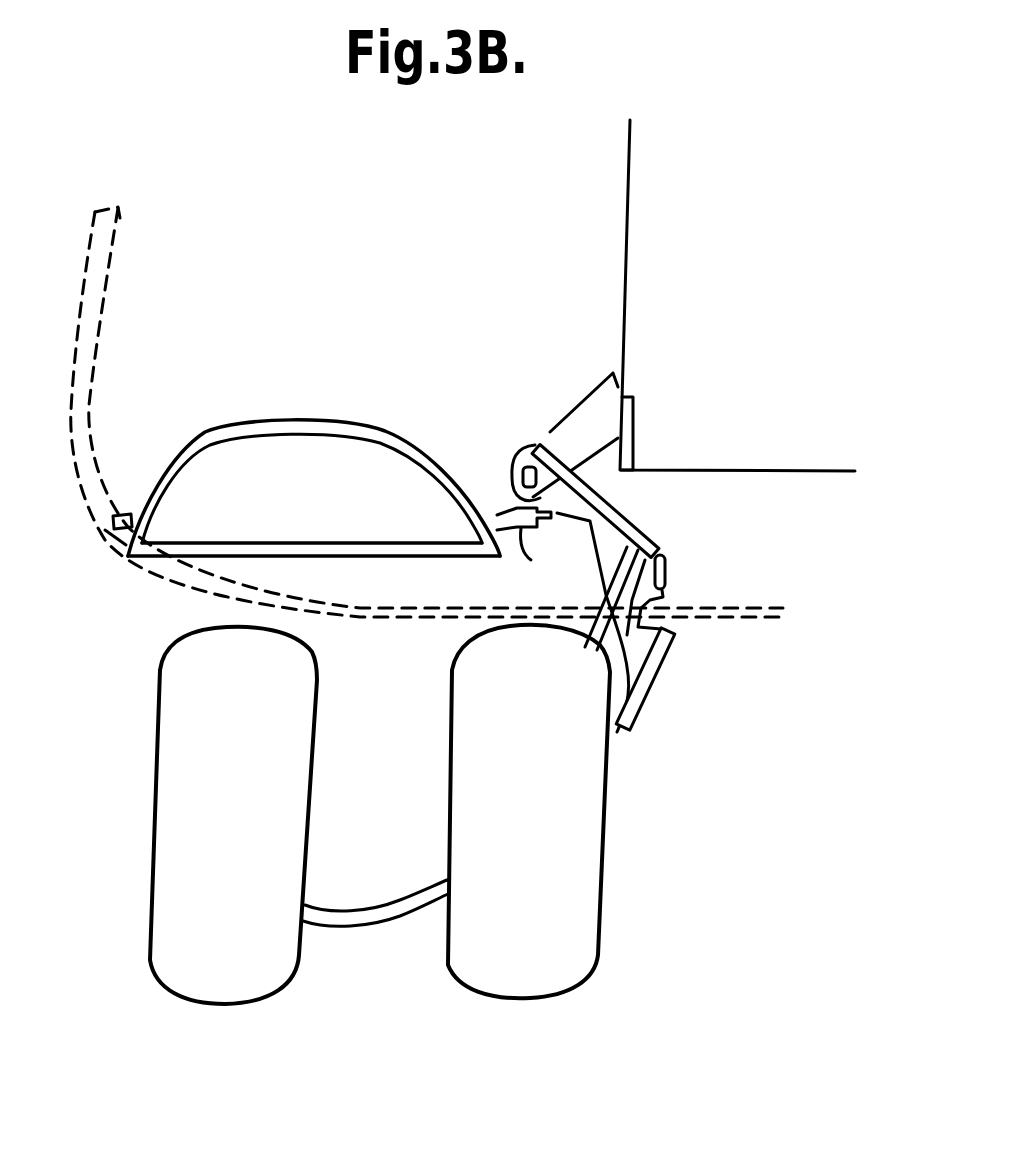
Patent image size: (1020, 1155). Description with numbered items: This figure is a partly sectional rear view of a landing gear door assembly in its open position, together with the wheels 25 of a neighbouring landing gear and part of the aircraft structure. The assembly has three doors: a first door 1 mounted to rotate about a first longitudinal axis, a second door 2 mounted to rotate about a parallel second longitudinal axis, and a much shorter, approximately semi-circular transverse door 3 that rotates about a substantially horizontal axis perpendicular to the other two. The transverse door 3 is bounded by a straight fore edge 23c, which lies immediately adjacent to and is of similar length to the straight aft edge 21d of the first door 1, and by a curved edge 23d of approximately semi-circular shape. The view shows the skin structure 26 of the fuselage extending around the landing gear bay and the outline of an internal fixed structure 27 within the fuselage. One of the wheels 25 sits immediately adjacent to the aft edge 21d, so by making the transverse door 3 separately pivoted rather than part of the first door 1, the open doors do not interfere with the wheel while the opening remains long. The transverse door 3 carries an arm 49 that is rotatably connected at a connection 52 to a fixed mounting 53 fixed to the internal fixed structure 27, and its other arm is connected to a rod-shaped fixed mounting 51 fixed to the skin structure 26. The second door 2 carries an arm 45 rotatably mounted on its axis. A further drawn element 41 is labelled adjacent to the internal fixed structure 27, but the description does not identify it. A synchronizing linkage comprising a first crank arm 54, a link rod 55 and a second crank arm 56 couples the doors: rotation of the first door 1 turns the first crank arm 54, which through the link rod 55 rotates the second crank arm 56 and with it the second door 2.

The first door 1 is at (375, 914).
The second door 2 is at (648, 676).
The transverse door 3 is at (314, 445).
The straight aft edge 21d is at (397, 920).
The straight fore edge 23c is at (432, 566).
The curved edge 23d is at (387, 432).
The wheels 25 is at (158, 985).
The skin structure 26 is at (97, 316).
The internal fixed structure 27 is at (628, 240).
The mounting plate 41 is at (618, 378).
The arm 45 is at (668, 656).
The arm 49 is at (531, 560).
The rod-shaped fixed mounting 51 is at (103, 532).
The connection 52 is at (512, 506).
The fixed mounting 53 is at (633, 430).
The first crank arm 54 is at (513, 460).
The link rod 55 is at (635, 522).
The second crank arm 56 is at (668, 573).